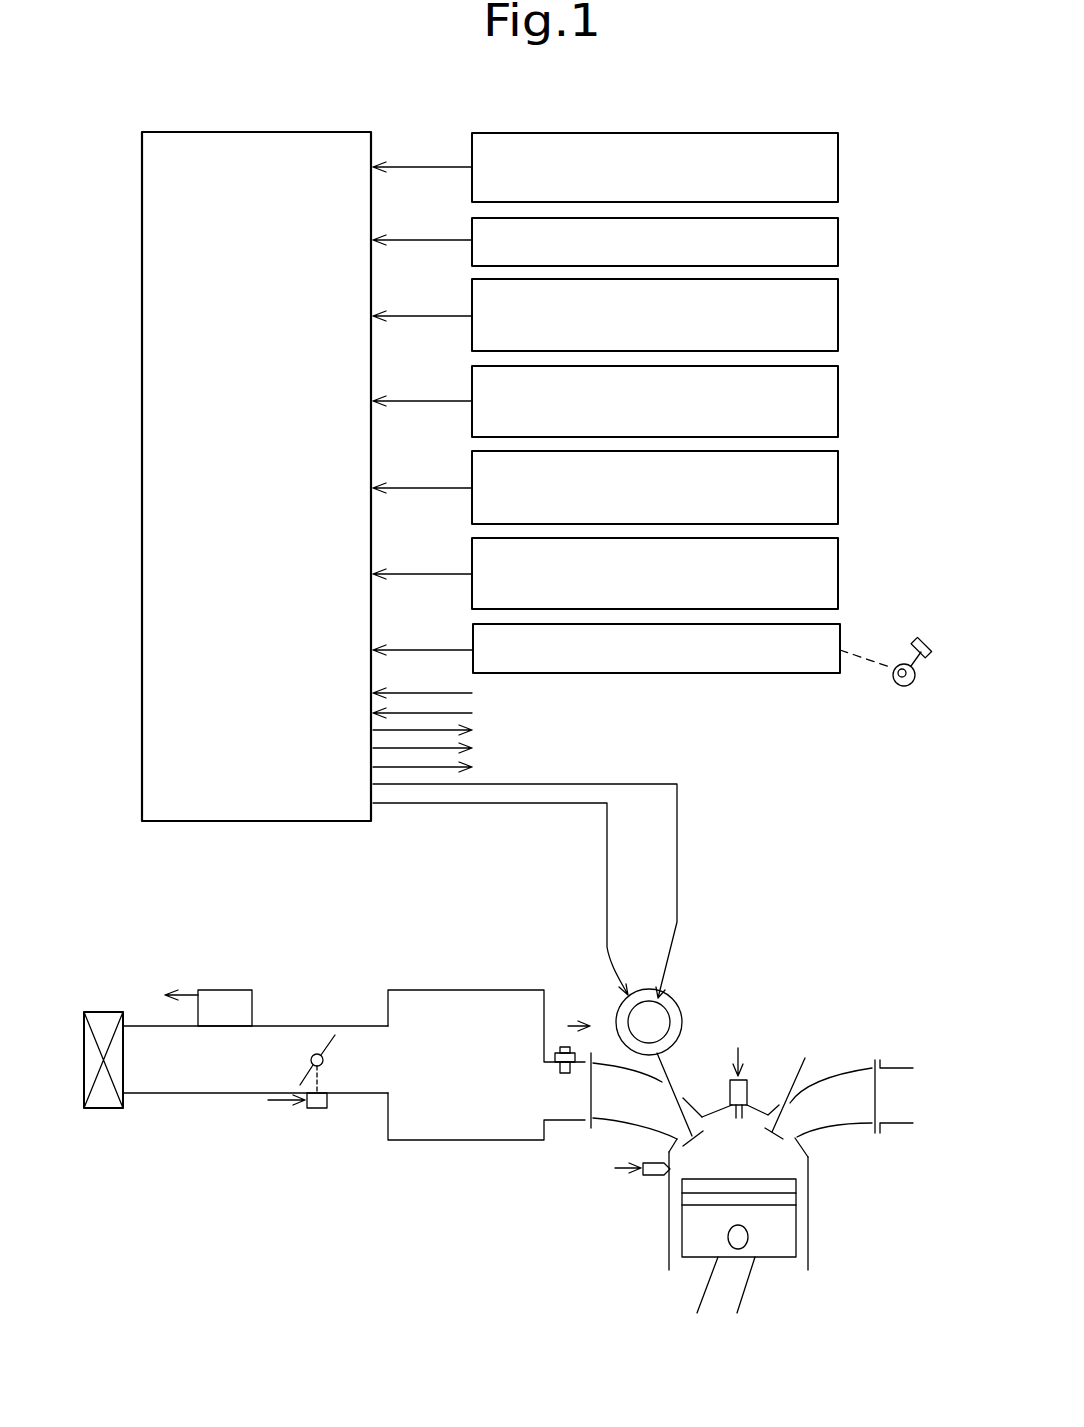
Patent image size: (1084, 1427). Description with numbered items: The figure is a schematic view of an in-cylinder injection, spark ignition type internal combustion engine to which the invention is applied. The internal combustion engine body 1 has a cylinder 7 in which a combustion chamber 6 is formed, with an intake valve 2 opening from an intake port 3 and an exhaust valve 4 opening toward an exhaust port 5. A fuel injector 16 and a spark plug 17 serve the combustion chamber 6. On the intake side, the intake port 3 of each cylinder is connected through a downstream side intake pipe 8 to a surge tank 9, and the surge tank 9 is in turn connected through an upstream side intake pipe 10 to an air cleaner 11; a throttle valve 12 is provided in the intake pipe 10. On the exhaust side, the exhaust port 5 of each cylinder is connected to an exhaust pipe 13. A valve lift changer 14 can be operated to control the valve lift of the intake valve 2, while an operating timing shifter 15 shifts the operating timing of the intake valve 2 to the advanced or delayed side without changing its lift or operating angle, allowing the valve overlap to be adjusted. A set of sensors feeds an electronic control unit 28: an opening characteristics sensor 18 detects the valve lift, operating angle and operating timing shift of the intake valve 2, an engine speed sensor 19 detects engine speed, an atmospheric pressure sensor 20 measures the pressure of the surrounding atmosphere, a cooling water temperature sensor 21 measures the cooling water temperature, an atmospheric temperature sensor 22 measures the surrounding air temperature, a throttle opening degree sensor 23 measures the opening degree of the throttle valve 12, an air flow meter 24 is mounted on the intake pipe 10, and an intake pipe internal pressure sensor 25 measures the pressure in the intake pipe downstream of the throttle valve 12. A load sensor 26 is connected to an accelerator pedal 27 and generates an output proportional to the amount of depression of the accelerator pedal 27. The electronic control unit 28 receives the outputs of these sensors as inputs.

The internal combustion engine body 1 is at (844, 1250).
The intake valve 2 is at (698, 1100).
The intake port 3 is at (612, 1125).
The exhaust valve 4 is at (820, 1080).
The exhaust port 5 is at (853, 1127).
The combustion chamber 6 is at (773, 1163).
The cylinder 7 is at (663, 1218).
The downstream side intake pipe 8 is at (548, 1141).
The surge tank 9 is at (440, 990).
The upstream side intake pipe 10 is at (178, 1095).
The air cleaner 11 is at (103, 1110).
The throttle valve 12 is at (320, 1035).
The exhaust pipe 13 is at (903, 1066).
The valve lift changer 14 is at (628, 1017).
The operating timing shifter 15 is at (673, 1002).
The fuel injector 16 is at (650, 1178).
The spark plug 17 is at (742, 1048).
The opening characteristics sensor 18 is at (840, 166).
The engine speed sensor 19 is at (840, 244).
The atmospheric pressure sensor 20 is at (840, 316).
The cooling water temperature sensor 21 is at (840, 402).
The atmospheric temperature sensor 22 is at (840, 488).
The throttle opening degree sensor 23 is at (840, 572).
The air flow meter 24 is at (226, 990).
The intake pipe internal pressure sensor 25 is at (557, 1047).
The load sensor 26 is at (772, 675).
The accelerator pedal 27 is at (900, 686).
The electronic control unit 28 is at (215, 132).